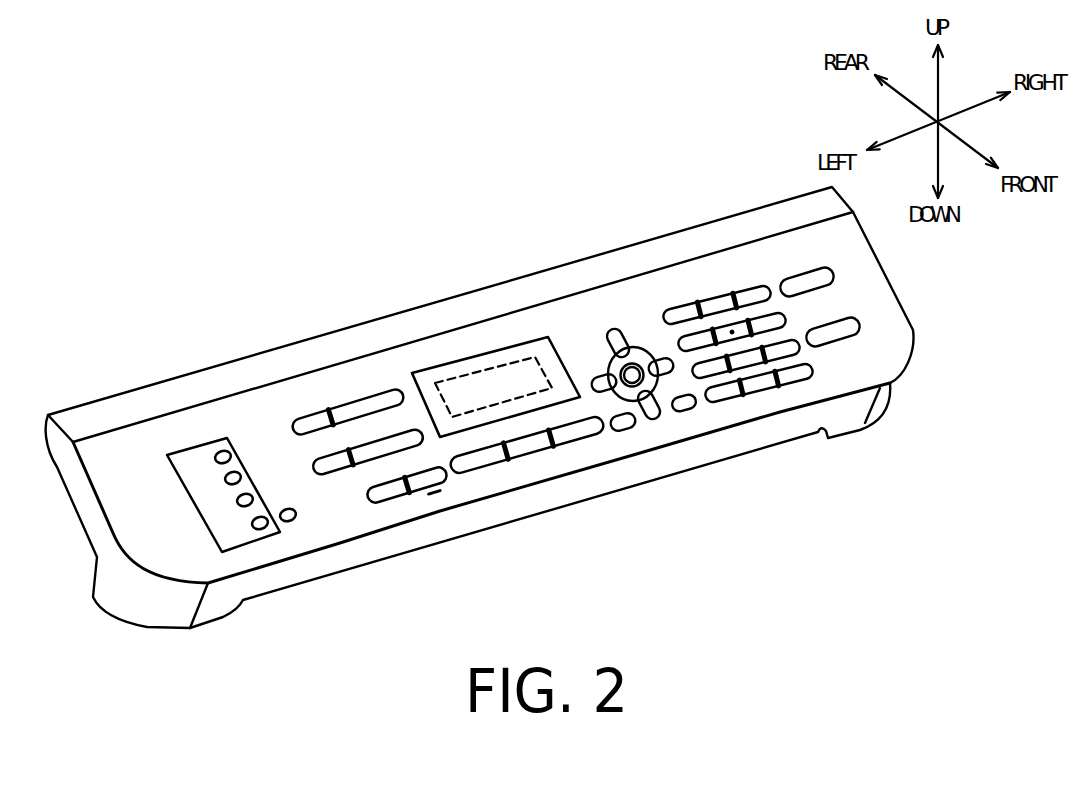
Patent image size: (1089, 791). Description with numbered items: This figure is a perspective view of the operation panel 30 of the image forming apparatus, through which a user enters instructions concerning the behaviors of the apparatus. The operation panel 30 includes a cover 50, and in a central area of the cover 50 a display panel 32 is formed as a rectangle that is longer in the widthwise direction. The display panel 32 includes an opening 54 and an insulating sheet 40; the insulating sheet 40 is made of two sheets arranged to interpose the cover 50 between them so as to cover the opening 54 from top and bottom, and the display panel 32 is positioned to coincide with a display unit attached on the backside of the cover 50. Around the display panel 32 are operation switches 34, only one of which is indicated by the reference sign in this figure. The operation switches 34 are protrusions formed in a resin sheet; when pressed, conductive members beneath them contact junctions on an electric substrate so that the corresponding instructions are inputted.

The operation panel 30 is at (690, 608).
The display panel 32 is at (423, 360).
The operation switches 34 is at (613, 327).
The insulating sheet 40 is at (540, 337).
The cover 50 is at (127, 460).
The opening 54 is at (492, 360).